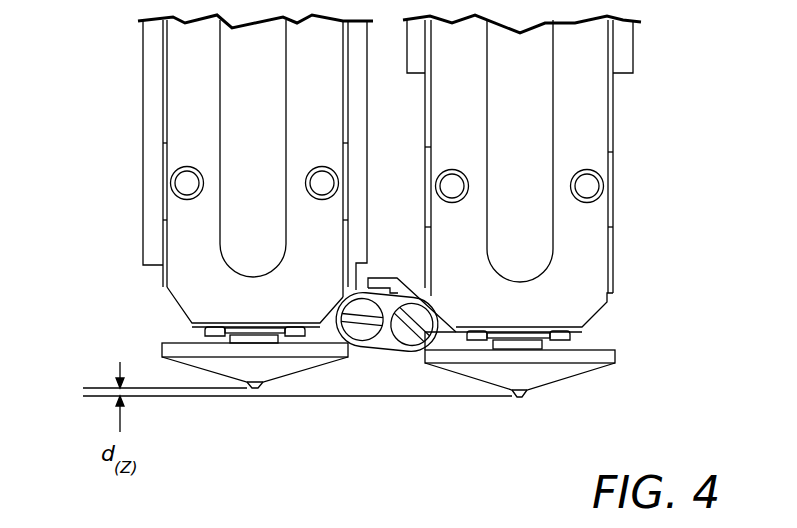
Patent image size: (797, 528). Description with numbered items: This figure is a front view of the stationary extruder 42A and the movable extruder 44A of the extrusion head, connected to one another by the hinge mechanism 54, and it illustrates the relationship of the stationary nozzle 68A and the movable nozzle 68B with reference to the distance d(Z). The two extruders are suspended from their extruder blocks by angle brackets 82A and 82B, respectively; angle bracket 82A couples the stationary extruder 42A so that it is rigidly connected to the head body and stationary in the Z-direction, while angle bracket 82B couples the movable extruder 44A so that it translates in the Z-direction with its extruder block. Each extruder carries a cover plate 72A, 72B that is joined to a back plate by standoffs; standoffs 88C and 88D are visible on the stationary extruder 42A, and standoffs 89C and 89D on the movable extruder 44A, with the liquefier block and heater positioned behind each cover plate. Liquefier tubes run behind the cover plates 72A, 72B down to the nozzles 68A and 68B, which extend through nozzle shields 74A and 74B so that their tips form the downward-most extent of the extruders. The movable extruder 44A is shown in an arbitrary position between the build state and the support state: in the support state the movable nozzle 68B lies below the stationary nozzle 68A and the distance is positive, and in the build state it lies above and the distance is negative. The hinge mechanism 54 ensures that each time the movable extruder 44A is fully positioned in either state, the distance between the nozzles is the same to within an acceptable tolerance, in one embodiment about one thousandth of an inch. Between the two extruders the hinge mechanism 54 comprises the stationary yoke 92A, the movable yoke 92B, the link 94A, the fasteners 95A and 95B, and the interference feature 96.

The stationary extruder 42A is at (132, 153).
The movable extruder 44A is at (628, 122).
The hinge mechanism 54 is at (378, 390).
The stationary nozzle 68A is at (258, 388).
The movable nozzle 68B is at (523, 392).
The cover plate 72A is at (279, 76).
The cover plate 72B is at (540, 76).
The nozzle shield 74A is at (162, 352).
The nozzle shield 74B is at (615, 355).
The angle bracket 82A is at (148, 72).
The angle bracket 82B is at (627, 48).
The standoff 88C is at (182, 190).
The standoff 88D is at (324, 182).
The standoff 89C is at (598, 186).
The standoff 89D is at (443, 188).
The stationary yoke 92A is at (200, 326).
The movable yoke 92B is at (593, 332).
The link 94A is at (385, 342).
The fastener 95A is at (360, 337).
The fastener 95B is at (407, 340).
The interference feature 96 is at (393, 282).